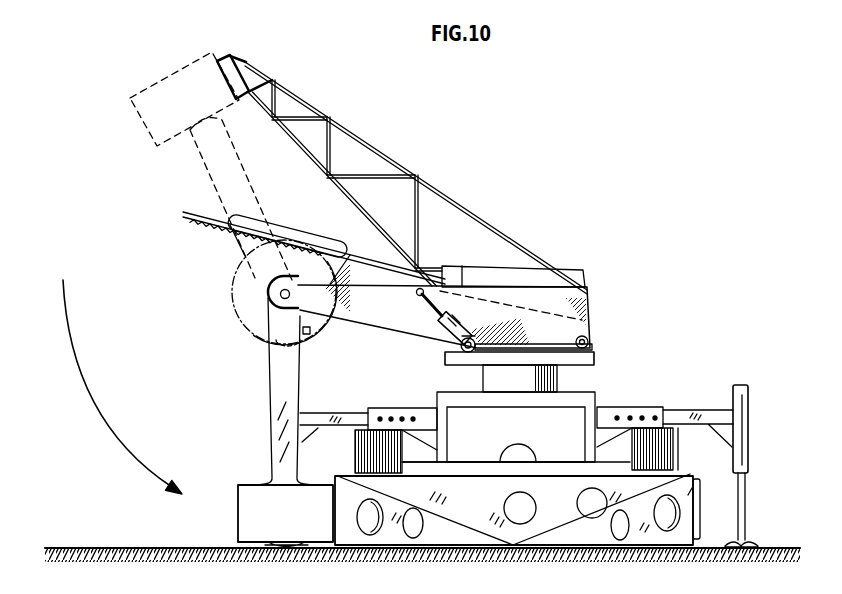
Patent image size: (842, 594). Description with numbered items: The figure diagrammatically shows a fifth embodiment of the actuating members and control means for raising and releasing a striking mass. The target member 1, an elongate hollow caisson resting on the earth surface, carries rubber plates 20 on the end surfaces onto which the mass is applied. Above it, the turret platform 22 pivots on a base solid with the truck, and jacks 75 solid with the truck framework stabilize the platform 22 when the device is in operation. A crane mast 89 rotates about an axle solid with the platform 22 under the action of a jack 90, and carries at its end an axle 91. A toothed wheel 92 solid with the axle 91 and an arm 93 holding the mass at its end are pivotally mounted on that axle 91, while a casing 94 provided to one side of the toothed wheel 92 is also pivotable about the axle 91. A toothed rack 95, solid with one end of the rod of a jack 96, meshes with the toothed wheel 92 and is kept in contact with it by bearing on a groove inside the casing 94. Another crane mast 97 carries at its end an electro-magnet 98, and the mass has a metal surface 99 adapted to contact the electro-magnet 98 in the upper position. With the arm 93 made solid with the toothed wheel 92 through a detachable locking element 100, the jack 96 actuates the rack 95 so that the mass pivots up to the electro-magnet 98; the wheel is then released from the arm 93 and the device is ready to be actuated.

The target member 1 is at (690, 469).
The rubber plates 20 is at (335, 475).
The platform 22 is at (596, 360).
The jacks 75 is at (735, 386).
The crane mast 89 is at (378, 325).
The jack 90 is at (443, 328).
The axle 91 is at (273, 291).
The toothed wheel 92 is at (250, 313).
The arm 93 is at (270, 386).
The casing 94 is at (287, 228).
The toothed rack 95 is at (203, 223).
The jack 96 is at (488, 285).
The crane mast 97 is at (373, 150).
The electro-magnet 98 is at (226, 60).
The metal surface 99 is at (240, 492).
The detachable locking element 100 is at (308, 334).